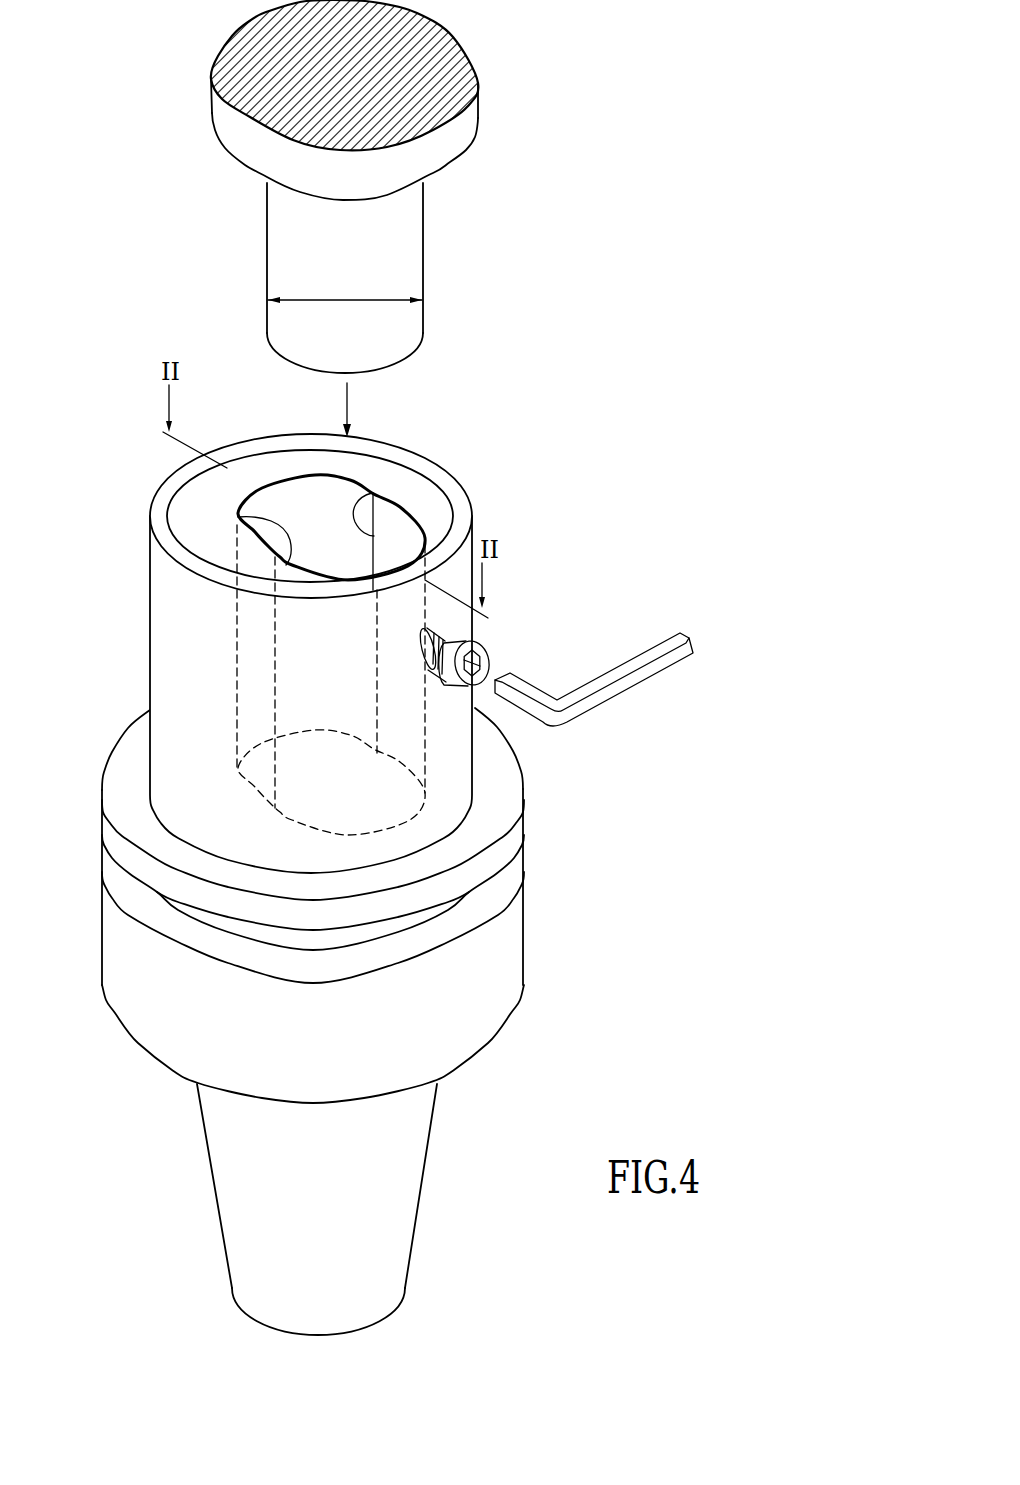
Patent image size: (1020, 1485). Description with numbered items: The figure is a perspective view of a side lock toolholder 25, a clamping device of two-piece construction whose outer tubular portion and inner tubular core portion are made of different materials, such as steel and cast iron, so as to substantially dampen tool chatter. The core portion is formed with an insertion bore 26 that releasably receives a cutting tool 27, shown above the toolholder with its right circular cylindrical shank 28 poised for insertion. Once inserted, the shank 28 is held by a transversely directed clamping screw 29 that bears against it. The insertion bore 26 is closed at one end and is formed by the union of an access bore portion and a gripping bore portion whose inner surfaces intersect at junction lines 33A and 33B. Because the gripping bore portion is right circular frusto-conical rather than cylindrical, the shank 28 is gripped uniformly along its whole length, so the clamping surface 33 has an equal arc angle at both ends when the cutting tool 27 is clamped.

The side lock toolholder 25 is at (574, 448).
The insertion bore 26 is at (309, 490).
The cutting tool 27 is at (530, 115).
The right circular cylindrical shank 28 is at (303, 217).
The clamping screw 29 is at (496, 631).
The clamping surface 33 is at (272, 508).
The junction line 33A is at (237, 519).
The junction line 33B is at (352, 478).